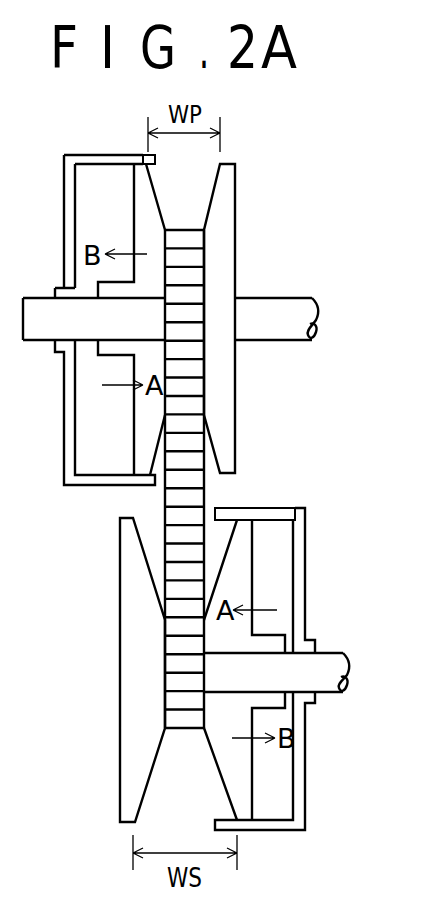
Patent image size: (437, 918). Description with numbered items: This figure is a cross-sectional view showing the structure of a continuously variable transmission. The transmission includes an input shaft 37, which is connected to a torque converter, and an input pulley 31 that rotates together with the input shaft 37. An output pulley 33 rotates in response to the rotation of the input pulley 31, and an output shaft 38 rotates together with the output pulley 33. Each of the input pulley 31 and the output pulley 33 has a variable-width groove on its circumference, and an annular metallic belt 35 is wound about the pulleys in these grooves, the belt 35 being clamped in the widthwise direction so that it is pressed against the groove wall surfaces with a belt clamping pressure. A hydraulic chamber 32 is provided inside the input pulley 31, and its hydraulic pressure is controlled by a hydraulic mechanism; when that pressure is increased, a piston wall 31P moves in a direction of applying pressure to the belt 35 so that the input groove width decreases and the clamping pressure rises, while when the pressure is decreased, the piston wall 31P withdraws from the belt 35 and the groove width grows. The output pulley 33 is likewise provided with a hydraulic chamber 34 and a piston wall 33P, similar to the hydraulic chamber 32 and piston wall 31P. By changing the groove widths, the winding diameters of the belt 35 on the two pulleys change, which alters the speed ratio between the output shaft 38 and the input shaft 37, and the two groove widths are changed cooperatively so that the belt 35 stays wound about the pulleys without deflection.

The input pulley 31 is at (261, 155).
The piston wall 31P is at (141, 173).
The hydraulic chamber 32 is at (85, 180).
The output pulley 33 is at (323, 550).
The piston wall 33P is at (243, 526).
The hydraulic chamber 34 is at (287, 509).
The belt 35 is at (165, 497).
The input shaft 37 is at (269, 298).
The output shaft 38 is at (322, 653).